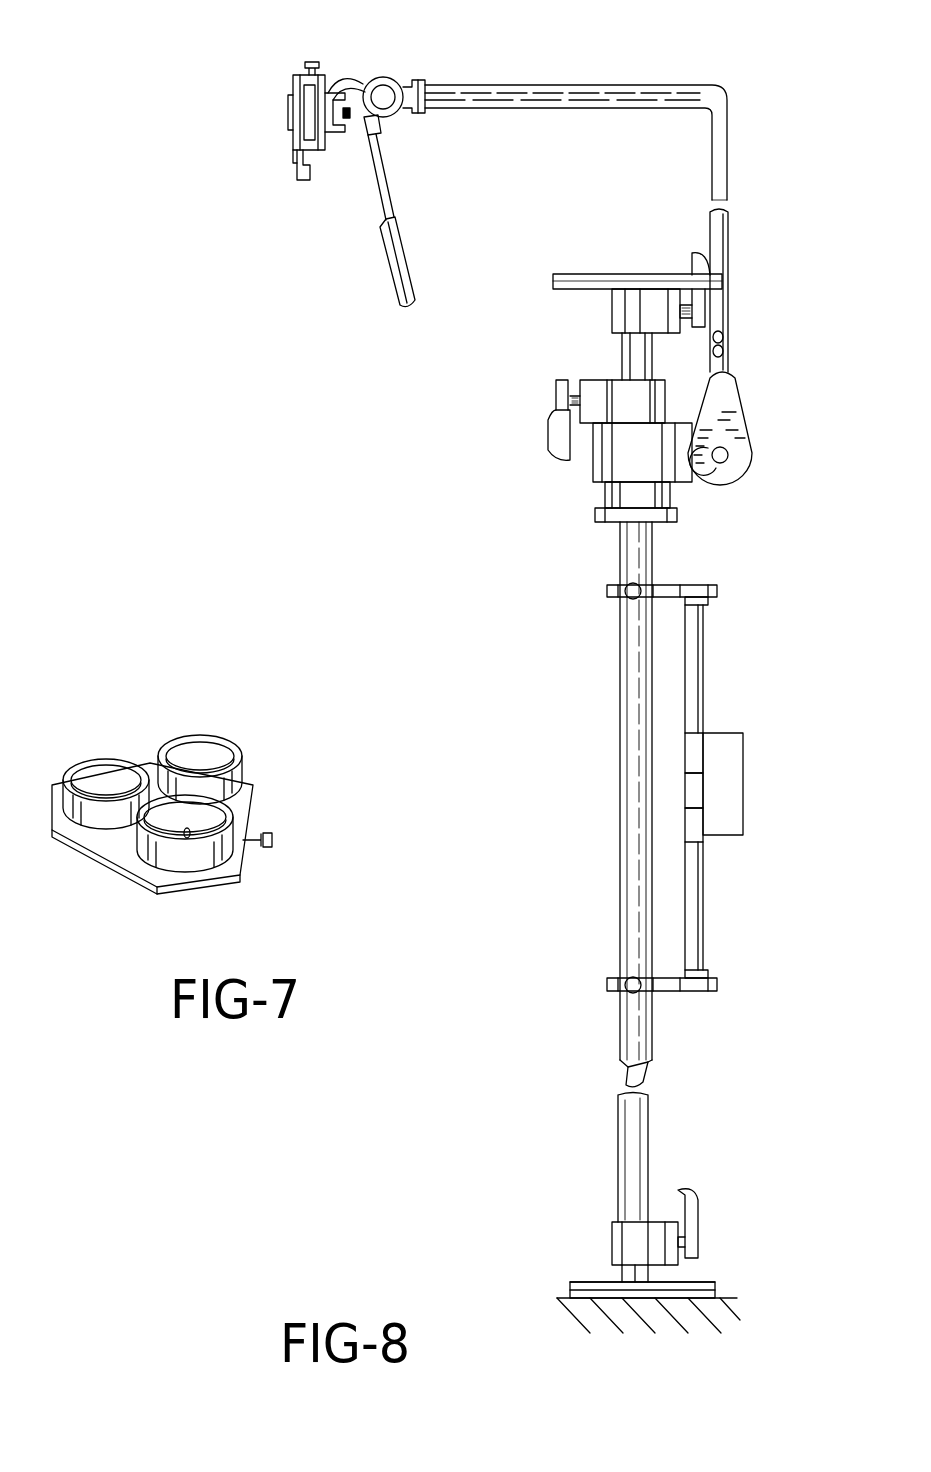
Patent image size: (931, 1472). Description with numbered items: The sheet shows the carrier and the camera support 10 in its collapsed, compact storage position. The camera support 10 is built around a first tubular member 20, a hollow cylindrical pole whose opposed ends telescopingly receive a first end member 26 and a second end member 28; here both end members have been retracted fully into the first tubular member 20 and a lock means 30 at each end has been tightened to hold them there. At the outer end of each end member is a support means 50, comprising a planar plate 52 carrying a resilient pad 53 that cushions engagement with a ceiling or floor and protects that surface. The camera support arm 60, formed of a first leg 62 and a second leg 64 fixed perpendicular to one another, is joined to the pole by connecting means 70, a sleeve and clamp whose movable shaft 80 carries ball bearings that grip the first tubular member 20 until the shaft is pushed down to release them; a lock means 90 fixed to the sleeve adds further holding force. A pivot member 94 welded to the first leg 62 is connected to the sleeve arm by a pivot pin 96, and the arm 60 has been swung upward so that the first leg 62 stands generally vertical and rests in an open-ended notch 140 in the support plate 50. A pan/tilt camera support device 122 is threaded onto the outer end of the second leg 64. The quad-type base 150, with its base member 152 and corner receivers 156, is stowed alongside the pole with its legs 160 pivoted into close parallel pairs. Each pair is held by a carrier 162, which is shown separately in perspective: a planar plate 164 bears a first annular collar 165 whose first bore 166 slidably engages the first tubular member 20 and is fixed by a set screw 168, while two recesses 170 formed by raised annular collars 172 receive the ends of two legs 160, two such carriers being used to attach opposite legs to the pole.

In FIG. 8, the camera support 10 is at (438, 497).
In FIG. 8, the first tubular member 20 is at (635, 788).
In FIG. 8, the first end member 26 is at (622, 352).
In FIG. 8, the second end member 28 is at (652, 1274).
In FIG. 8, the lock means 30 is at (710, 272).
In FIG. 8, the support means 50 is at (553, 282).
In FIG. 8, the planar plate 52 is at (585, 1280).
In FIG. 8, the resilient pad 53 is at (570, 1288).
In FIG. 8, the camera support arm 60 is at (612, 45).
In FIG. 8, the first leg 62 is at (724, 240).
In FIG. 8, the second leg 64 is at (450, 87).
In FIG. 8, the connecting means 70 is at (625, 457).
In FIG. 8, the shaft 80 is at (605, 496).
In FIG. 8, the lock means 90 is at (600, 402).
In FIG. 8, the pivot member 94 is at (730, 402).
In FIG. 8, the pivot pin 96 is at (725, 460).
In FIG. 8, the pan/tilt camera support device 122 is at (345, 22).
In FIG. 8, the open-ended notch 140 is at (693, 270).
In FIG. 8, the base 150 is at (795, 770).
In FIG. 8, the base member 152 is at (725, 800).
In FIG. 8, the receivers 156 is at (695, 735).
In FIG. 8, the legs 160 is at (690, 665).
In FIG. 7, the carrier 162 is at (272, 698).
In FIG. 8, the carrier 162 is at (604, 592).
In FIG. 7, the planar plate 164 is at (240, 814).
In FIG. 8, the planar plate 164 is at (665, 580).
In FIG. 7, the first annular collar 165 is at (165, 858).
In FIG. 7, the first bore 166 is at (190, 840).
In FIG. 7, the set screw 168 is at (275, 840).
In FIG. 7, the recesses 170 is at (100, 772).
In FIG. 7, the annular collars 172 is at (168, 742).
In FIG. 8, the annular collars 172 is at (708, 600).